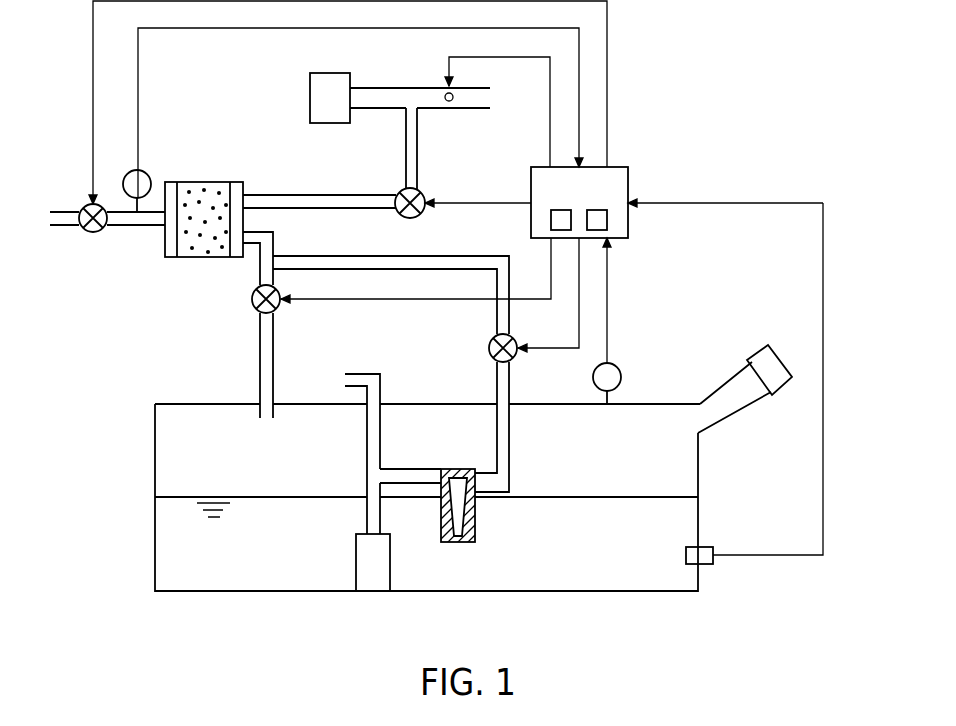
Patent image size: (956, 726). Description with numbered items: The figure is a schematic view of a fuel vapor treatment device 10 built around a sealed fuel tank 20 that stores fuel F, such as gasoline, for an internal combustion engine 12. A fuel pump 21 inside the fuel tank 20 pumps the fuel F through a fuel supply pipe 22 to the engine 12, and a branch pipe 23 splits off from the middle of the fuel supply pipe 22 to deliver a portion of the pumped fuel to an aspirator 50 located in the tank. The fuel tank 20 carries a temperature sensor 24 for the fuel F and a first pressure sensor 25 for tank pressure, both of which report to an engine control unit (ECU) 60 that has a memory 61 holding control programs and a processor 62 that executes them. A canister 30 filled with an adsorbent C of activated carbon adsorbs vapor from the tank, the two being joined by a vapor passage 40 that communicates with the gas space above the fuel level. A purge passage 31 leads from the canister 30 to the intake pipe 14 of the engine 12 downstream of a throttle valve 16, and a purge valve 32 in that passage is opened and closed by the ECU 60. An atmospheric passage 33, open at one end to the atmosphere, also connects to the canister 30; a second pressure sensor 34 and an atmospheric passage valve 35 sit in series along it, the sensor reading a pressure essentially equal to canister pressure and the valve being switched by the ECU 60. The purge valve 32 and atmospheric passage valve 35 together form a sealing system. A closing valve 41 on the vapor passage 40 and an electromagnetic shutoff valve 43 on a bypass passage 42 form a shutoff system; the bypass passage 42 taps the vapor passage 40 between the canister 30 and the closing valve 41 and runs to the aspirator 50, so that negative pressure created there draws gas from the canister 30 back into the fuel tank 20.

The fuel vapor treatment device 10 is at (670, 62).
The internal combustion engine 12 is at (310, 90).
The intake pipe 14 is at (428, 108).
The throttle valve 16 is at (446, 95).
The fuel tank 20 is at (442, 468).
The fuel pump 21 is at (376, 575).
The fuel supply pipe 22 is at (367, 437).
The branch pipe 23 is at (412, 478).
The temperature sensor 24 is at (714, 560).
The first pressure sensor 25 is at (620, 372).
The canister 30 is at (202, 221).
The purge passage 31 is at (312, 200).
The purge valve 32 is at (397, 195).
The atmospheric passage 33 is at (137, 226).
The second pressure sensor 34 is at (145, 173).
The atmospheric passage valve 35 is at (93, 232).
The vapor passage 40 is at (260, 363).
The closing valve 41 is at (252, 300).
The bypass passage 42 is at (422, 262).
The electromagnetic shutoff valve 43 is at (489, 345).
The aspirator 50 is at (458, 545).
The engine control unit (ECU) 60 is at (592, 201).
The memory 61 is at (558, 209).
The processor 62 is at (607, 220).
The adsorbent C is at (205, 186).
The fuel F is at (170, 547).